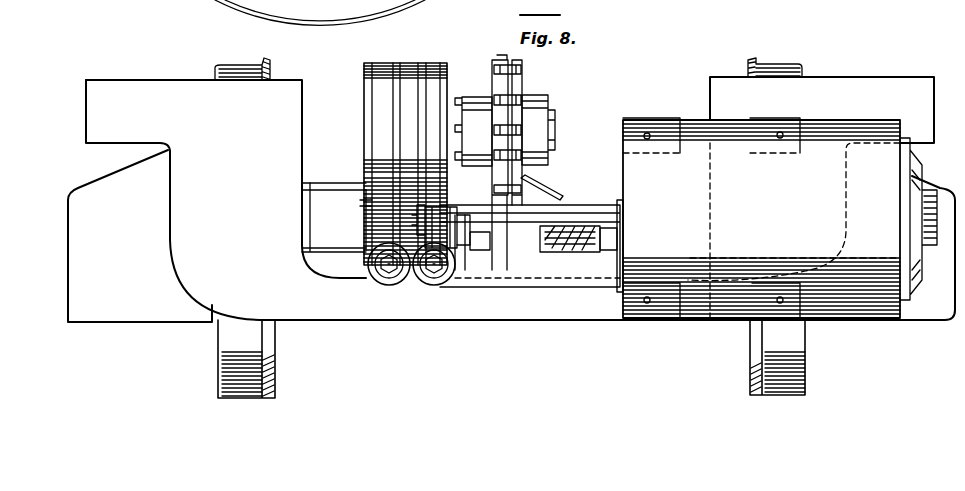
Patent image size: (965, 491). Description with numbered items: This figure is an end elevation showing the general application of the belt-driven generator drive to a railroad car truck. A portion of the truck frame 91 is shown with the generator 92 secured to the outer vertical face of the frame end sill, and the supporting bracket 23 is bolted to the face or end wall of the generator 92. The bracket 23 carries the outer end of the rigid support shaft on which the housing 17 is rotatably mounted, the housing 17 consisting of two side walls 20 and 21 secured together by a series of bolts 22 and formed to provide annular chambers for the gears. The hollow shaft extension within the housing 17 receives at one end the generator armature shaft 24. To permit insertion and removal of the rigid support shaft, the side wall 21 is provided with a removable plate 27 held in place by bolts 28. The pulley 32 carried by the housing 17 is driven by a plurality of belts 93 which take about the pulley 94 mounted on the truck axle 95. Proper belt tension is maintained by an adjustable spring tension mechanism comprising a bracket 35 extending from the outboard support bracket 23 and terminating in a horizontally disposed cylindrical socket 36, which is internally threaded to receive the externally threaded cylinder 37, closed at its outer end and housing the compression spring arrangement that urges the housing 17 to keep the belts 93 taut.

The housing 17 is at (525, 86).
The side wall 20 is at (531, 94).
The side wall 21 is at (493, 72).
The bolts 22 is at (491, 76).
The bracket 23 is at (506, 288).
The generator armature shaft 24 is at (590, 233).
The removable plate 27 is at (461, 284).
The bolts 28 is at (432, 272).
The pulley 32 is at (364, 88).
The bracket 35 is at (366, 206).
The cylindrical socket 36 is at (368, 264).
The externally threaded cylinder 37 is at (370, 248).
The truck frame 91 is at (290, 322).
The generator 92 is at (714, 322).
The belts 93 is at (385, 68).
The pulley 94 is at (363, 189).
The truck axle 95 is at (316, 180).